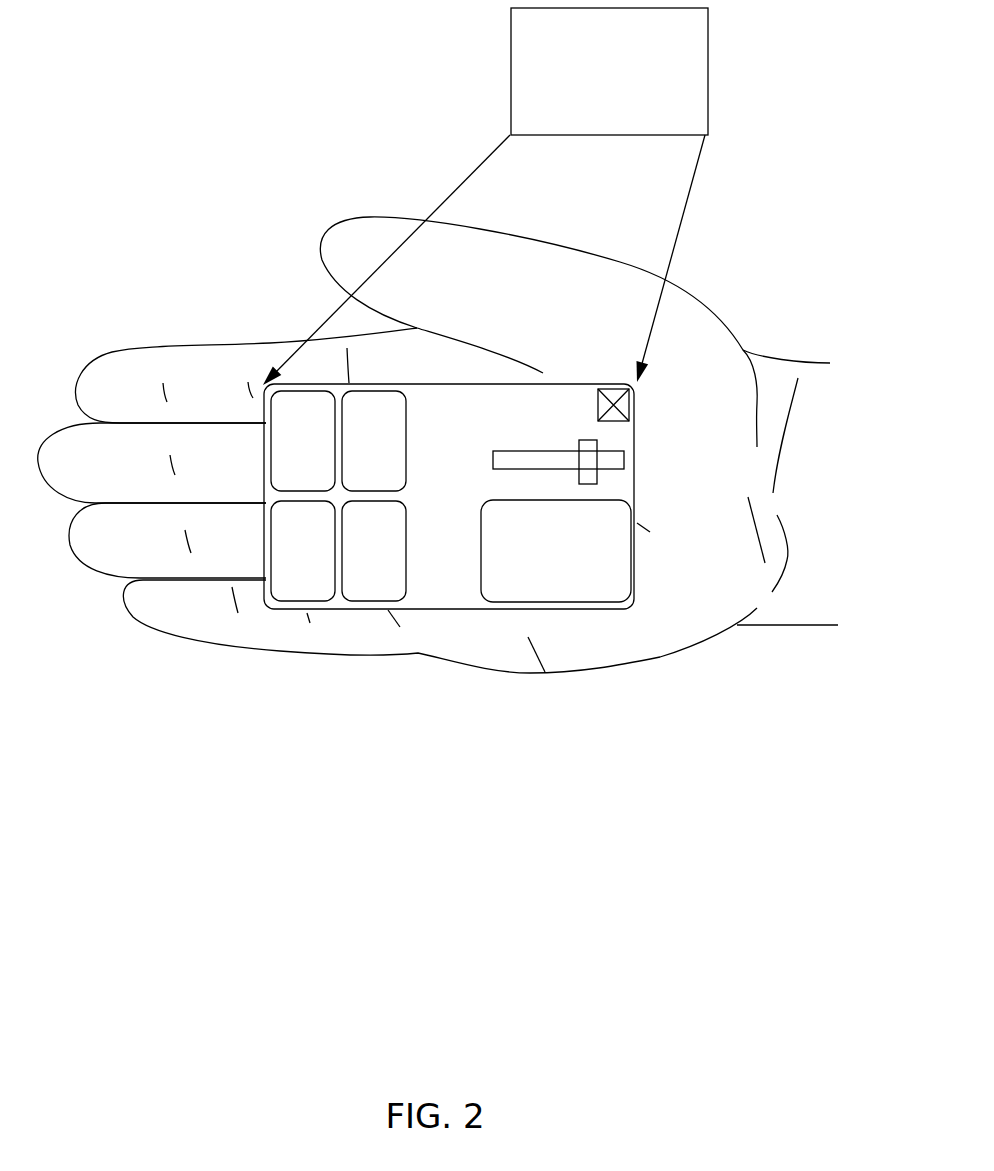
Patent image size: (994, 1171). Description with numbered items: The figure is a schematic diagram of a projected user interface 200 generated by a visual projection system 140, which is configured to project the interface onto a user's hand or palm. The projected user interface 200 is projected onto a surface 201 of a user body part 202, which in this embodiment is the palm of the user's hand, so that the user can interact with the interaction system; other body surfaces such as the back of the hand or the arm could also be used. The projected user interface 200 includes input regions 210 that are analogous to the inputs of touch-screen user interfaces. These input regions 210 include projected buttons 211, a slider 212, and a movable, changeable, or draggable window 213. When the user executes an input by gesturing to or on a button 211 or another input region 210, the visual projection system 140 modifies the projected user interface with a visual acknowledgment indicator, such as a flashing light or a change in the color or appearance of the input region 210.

The visual projection system 140 is at (628, 126).
The projected user interface 200 is at (421, 544).
The surface 201 is at (689, 592).
The user body part 202 is at (742, 293).
The input region 210 is at (338, 614).
The projected button 211 is at (284, 454).
The slider 212 is at (565, 450).
The window 213 is at (538, 566).